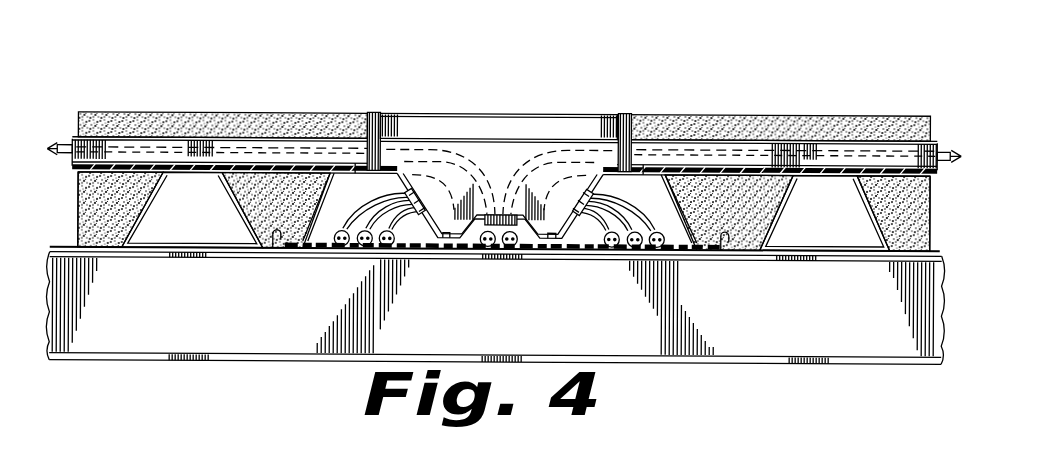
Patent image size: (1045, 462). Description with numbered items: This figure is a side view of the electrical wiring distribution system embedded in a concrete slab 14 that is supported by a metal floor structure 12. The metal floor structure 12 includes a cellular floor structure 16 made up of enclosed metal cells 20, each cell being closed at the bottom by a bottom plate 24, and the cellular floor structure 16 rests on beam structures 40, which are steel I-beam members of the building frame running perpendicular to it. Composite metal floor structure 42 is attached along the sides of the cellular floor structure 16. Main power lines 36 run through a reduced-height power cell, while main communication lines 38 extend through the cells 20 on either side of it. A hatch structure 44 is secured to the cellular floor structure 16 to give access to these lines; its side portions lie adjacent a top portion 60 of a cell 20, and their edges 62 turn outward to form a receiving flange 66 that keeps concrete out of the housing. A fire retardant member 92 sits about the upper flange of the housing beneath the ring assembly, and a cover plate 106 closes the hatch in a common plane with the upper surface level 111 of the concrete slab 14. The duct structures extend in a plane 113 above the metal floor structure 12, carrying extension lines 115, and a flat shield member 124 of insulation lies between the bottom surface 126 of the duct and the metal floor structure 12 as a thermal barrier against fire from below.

The metal floor structure 12 is at (199, 224).
The concrete slab 14 is at (742, 145).
The cellular floor structure 16 is at (306, 250).
The enclosed metal cells 20 is at (342, 186).
The bottom plate 24 is at (333, 250).
The main power lines 36 is at (492, 250).
The main communication lines 38 is at (415, 248).
The beam structures 40 is at (729, 327).
The composite metal floor structure 42 is at (140, 230).
The hatch structure 44 is at (484, 92).
The top portion 60 is at (357, 150).
The edges 62 is at (364, 150).
The receiving flange 66 is at (393, 170).
The fire retardant member 92 is at (515, 135).
The cover plate 106 is at (447, 113).
The upper surface level 111 is at (186, 130).
The plane 113 is at (259, 144).
The extension lines 115 is at (148, 145).
The shield member 124 is at (104, 150).
The bottom surface 126 is at (221, 150).